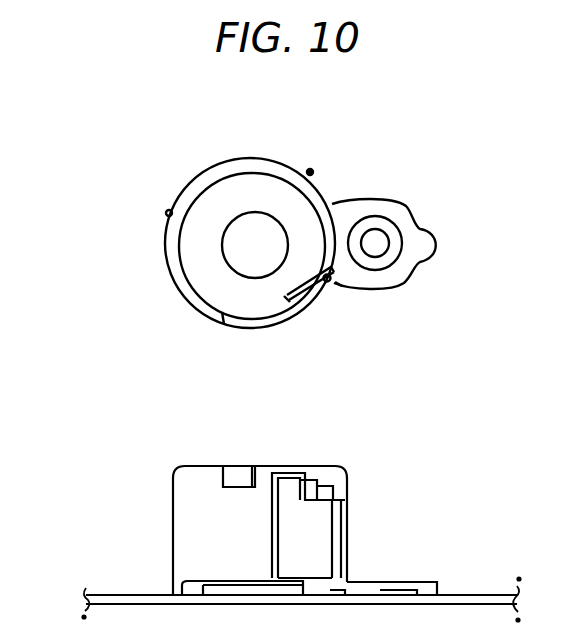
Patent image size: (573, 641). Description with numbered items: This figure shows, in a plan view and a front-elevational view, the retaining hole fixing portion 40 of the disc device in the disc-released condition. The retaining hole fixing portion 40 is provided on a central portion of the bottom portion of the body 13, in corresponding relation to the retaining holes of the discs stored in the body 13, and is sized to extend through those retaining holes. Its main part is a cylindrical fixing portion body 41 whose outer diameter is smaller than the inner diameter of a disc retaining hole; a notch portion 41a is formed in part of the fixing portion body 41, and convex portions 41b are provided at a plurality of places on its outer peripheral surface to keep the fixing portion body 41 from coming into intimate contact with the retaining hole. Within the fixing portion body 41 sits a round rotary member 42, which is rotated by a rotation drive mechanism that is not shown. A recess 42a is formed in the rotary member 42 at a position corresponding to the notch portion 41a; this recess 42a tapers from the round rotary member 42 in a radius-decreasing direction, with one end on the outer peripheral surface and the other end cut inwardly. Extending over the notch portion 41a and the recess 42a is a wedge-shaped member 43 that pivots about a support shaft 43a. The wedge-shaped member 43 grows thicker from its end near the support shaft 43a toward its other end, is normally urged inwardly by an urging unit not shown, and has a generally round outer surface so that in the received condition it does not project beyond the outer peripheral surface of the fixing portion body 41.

The body 13 is at (483, 594).
The retaining hole fixing portion 40 is at (146, 198).
The fixing portion body 41 is at (287, 162).
The notch portion 41a is at (346, 281).
The convex portion 41b is at (311, 172).
The rotary member 42 is at (219, 210).
The recess 42a is at (300, 310).
The wedge-shaped member 43 is at (311, 305).
The support shaft 43a is at (337, 291).